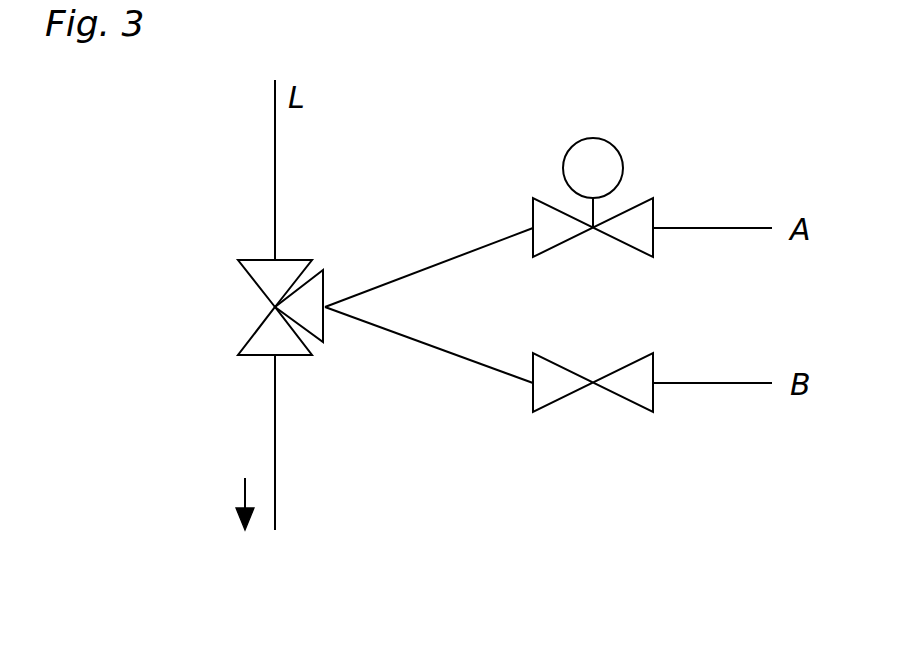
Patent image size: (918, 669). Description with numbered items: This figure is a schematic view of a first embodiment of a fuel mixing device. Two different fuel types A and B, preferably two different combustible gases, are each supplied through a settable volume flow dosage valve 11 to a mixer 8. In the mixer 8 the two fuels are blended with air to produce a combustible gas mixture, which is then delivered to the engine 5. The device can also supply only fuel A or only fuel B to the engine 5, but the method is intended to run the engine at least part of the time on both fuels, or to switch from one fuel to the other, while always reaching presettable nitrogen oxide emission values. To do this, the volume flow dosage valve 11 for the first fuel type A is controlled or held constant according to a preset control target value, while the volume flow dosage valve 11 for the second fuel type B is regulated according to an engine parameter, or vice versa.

The mixer 8 is at (268, 285).
The volume flow dosage valve 11 is at (645, 205).
The engine 5 is at (235, 496).